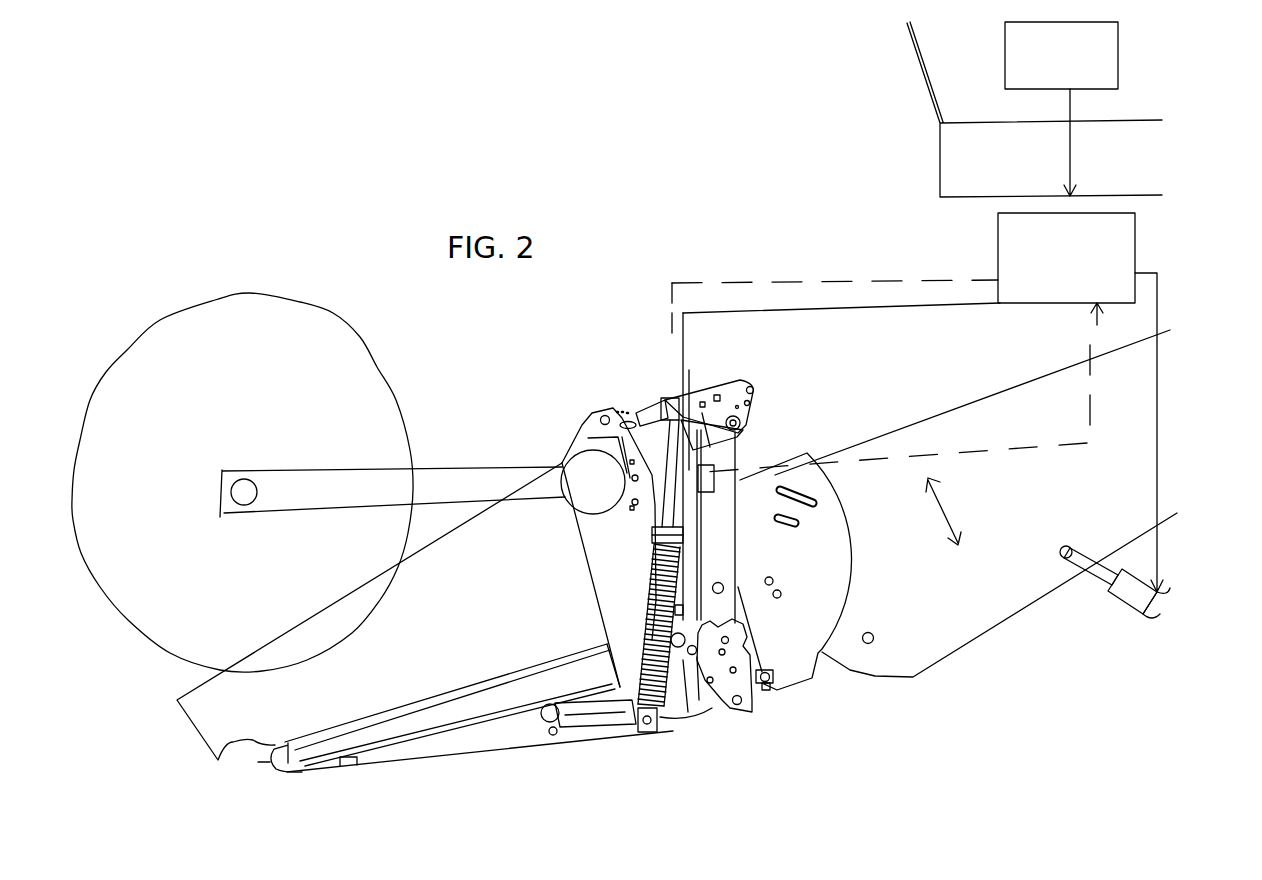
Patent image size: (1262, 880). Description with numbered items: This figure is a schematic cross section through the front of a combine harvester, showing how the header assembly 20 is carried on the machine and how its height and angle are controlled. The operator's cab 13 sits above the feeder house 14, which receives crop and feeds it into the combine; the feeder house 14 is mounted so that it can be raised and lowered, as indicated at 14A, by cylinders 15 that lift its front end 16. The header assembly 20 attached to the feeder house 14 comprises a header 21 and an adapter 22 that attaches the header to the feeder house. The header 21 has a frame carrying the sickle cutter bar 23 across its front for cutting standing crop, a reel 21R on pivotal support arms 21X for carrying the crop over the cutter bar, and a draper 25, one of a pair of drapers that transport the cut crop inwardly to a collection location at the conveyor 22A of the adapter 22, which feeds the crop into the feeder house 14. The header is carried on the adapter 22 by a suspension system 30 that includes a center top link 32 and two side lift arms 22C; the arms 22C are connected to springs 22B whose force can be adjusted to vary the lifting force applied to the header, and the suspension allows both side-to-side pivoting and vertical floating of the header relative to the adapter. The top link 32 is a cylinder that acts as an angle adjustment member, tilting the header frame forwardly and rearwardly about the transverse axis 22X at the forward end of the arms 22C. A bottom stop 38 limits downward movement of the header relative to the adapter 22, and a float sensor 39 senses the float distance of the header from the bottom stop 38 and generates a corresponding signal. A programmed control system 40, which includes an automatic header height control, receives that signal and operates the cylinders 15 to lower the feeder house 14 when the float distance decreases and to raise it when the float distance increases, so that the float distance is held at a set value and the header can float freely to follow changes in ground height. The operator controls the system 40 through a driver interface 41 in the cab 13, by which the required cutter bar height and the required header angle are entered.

The cab 13 is at (948, 90).
The feeder house 14 is at (1030, 402).
The raising and lowering movement of the feeder house 14A is at (940, 497).
The cylinders 15 is at (1130, 590).
The front end of the feeder house 16 is at (845, 470).
The header assembly 20 is at (675, 385).
The header 21 is at (462, 456).
The reel 21R is at (273, 312).
The pivotal support arms 21X is at (347, 477).
The adapter 22 is at (786, 400).
The conveyor 22A is at (560, 713).
The springs 22B is at (652, 553).
The lift arms 22C is at (612, 727).
The axis 22X is at (548, 705).
The cutter bar 23 is at (281, 745).
The draper 25 is at (460, 690).
The suspension system 30 is at (577, 389).
The center top link 32 is at (682, 405).
The bottom stop 38 is at (717, 717).
The float sensor 39 is at (712, 463).
The programmed control system 40 is at (1135, 230).
The driver interface 41 is at (1118, 40).